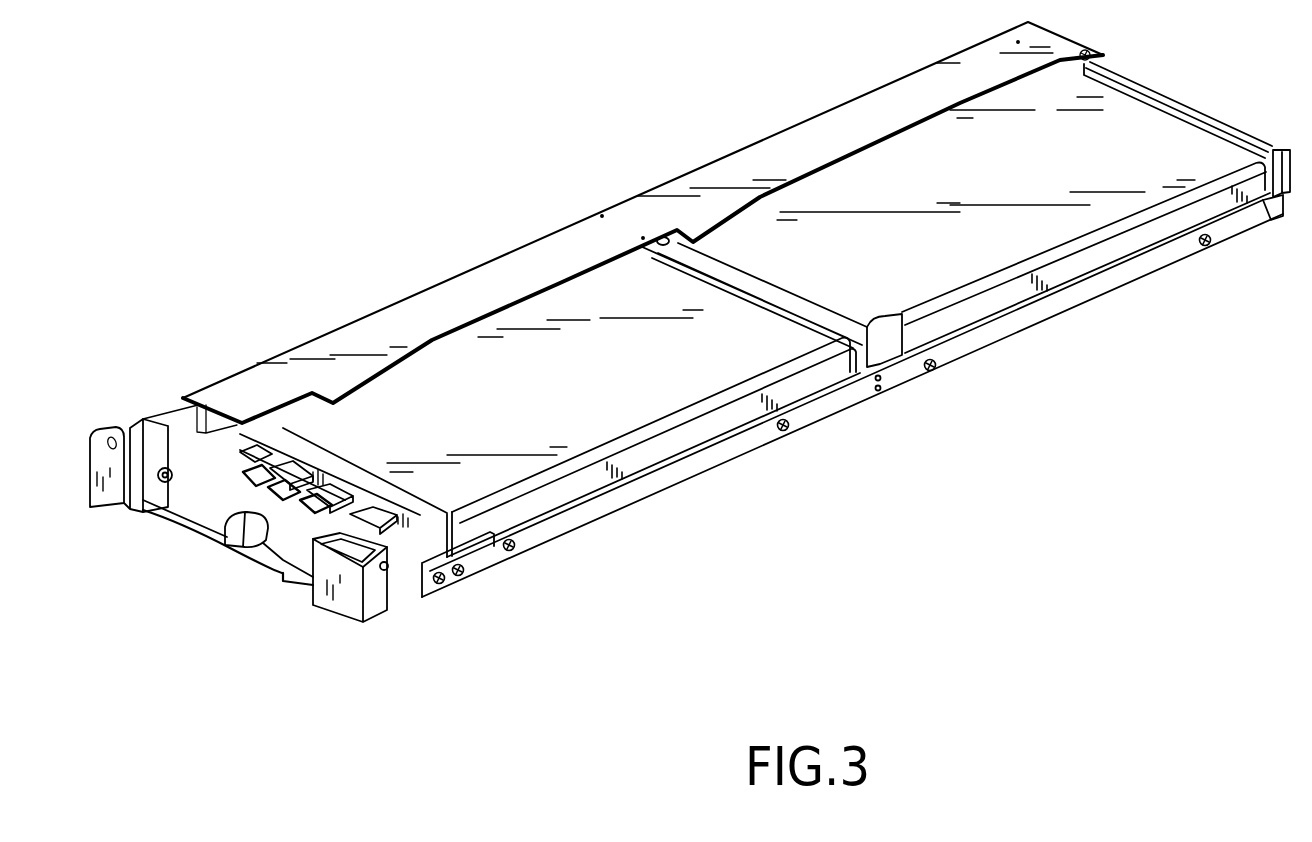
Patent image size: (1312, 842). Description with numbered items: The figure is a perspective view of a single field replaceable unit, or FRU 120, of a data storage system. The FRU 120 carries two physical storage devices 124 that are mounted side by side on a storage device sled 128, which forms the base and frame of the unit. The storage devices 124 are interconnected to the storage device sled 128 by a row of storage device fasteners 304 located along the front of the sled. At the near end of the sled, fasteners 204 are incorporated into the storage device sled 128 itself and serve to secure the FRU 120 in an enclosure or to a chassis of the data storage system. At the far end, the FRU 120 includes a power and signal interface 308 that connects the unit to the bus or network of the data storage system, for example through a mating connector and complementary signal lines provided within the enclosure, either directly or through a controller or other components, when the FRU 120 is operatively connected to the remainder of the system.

The field replaceable unit 120 is at (988, 341).
The storage device 124 is at (1138, 235).
The storage device sled 128 is at (565, 522).
The fastener 204 is at (117, 505).
The storage device fastener 304 is at (1211, 243).
The power and signal interface 308 is at (1277, 146).